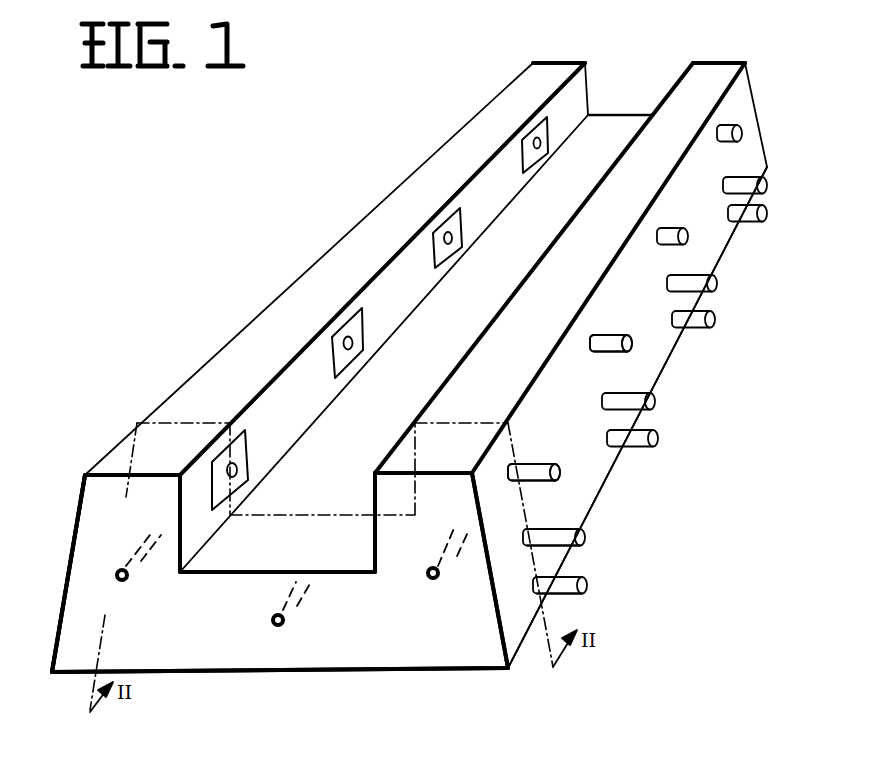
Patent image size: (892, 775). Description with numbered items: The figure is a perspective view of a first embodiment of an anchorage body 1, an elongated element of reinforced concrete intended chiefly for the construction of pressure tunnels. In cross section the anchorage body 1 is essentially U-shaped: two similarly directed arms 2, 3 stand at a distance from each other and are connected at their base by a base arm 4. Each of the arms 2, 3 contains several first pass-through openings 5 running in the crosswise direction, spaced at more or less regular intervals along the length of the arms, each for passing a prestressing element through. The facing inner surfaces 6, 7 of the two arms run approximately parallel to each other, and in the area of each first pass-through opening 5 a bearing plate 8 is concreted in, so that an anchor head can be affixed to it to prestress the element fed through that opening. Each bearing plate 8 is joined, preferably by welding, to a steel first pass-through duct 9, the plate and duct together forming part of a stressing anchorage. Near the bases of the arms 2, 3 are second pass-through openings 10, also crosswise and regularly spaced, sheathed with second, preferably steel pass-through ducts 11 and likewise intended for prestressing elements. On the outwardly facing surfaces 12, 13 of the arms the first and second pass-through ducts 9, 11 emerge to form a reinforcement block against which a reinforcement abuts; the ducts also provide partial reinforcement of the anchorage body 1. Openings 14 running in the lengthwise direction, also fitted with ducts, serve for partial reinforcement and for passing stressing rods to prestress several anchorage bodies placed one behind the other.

The anchorage body 1 is at (283, 670).
The arm 2 is at (230, 387).
The arm 3 is at (707, 83).
The base arm 4 is at (170, 642).
The first pass-through openings 5 is at (350, 333).
The inner surface 6 is at (580, 90).
The inner surface 7 is at (675, 80).
The bearing plate 8 is at (228, 468).
The first pass-through duct 9 is at (615, 333).
The second pass-through openings 10 is at (535, 585).
The second pass-through ducts 11 is at (572, 575).
The outwardly facing surface 12 is at (72, 543).
The outwardly facing surface 13 is at (570, 453).
The lengthwise openings 14 is at (115, 578).